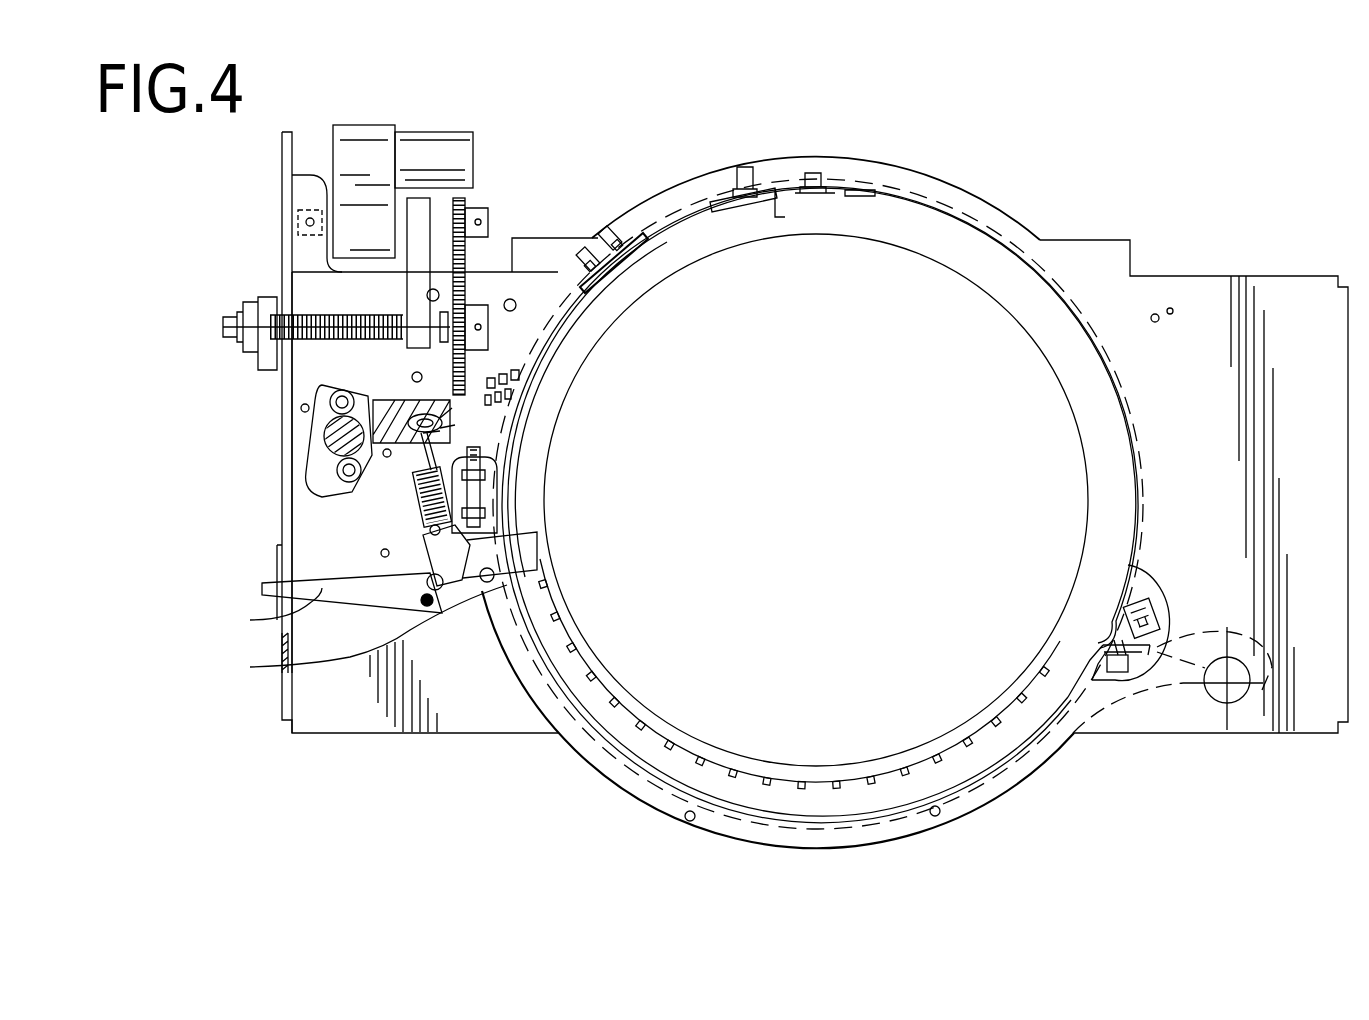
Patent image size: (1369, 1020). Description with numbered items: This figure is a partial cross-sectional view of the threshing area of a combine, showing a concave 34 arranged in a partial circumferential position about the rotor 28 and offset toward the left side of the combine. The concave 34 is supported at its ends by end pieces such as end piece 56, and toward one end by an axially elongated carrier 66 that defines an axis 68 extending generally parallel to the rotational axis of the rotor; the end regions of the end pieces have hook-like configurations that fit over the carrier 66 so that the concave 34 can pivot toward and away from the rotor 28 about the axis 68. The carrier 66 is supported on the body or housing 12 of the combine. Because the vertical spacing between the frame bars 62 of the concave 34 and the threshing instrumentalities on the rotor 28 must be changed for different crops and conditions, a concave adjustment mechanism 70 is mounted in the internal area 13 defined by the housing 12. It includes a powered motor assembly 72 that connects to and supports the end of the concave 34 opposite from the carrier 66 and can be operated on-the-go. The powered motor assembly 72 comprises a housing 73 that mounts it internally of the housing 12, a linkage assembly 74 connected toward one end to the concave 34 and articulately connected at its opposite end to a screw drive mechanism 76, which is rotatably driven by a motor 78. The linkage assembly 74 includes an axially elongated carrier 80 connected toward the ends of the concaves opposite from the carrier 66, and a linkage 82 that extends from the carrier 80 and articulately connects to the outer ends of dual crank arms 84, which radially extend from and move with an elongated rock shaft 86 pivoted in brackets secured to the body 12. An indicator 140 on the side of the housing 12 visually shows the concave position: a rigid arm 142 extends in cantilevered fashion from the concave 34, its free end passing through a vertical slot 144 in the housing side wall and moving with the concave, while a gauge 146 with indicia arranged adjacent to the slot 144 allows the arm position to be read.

The housing 12 is at (1224, 274).
The internal area 13 is at (281, 405).
The rotor 28 is at (831, 571).
The concave 34 is at (700, 836).
The end piece 56 is at (880, 830).
The frame bars 62 is at (815, 778).
The carrier 66 is at (1220, 690).
The axis 68 is at (1228, 692).
The concave adjustment mechanism 70 is at (386, 490).
The powered motor assembly 72 is at (486, 136).
The housing 73 is at (305, 258).
The linkage assembly 74 is at (412, 498).
The screw drive mechanism 76 is at (375, 343).
The motor 78 is at (378, 126).
The carrier 80 is at (430, 547).
The linkage 82 is at (452, 462).
The crank arms 84 is at (407, 412).
The rock shaft 86 is at (330, 437).
The indicator 140 is at (330, 630).
The arm 142 is at (320, 592).
The slot 144 is at (278, 562).
The gauge 146 is at (278, 548).